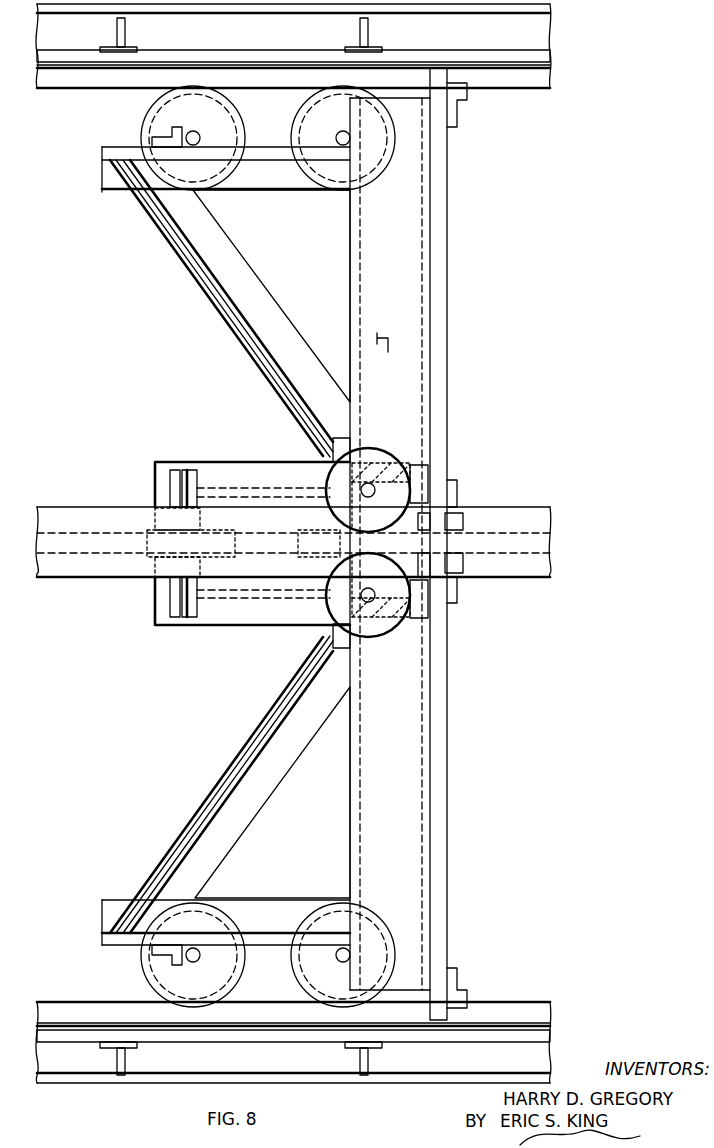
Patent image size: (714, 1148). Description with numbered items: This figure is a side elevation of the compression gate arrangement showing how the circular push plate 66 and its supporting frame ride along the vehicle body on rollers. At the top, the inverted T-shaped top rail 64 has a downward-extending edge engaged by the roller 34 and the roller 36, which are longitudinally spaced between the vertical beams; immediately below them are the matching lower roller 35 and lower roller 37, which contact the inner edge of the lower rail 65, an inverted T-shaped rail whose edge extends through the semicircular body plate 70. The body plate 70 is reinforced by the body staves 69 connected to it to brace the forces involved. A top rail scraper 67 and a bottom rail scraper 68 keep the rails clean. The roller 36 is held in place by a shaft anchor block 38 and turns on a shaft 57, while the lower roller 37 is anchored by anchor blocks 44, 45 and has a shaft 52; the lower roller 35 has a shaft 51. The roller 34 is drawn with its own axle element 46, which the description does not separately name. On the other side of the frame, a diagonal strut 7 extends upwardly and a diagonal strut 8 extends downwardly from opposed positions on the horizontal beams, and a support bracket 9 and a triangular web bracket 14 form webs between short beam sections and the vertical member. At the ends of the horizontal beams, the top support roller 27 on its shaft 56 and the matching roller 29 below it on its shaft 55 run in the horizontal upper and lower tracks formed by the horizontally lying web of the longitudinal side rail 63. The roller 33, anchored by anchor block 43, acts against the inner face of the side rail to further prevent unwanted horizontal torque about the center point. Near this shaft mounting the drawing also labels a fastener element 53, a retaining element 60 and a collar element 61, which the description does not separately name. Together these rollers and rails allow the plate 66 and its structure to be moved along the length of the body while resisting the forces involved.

The strut 7 is at (245, 723).
The strut 8 is at (245, 368).
The support bracket 9 is at (313, 262).
The bracket 14 is at (310, 828).
The top support roller 27 is at (368, 455).
The roller 29 is at (385, 585).
The roller 33 is at (160, 545).
The roller 34 is at (294, 118).
The lower roller 35 is at (283, 975).
The roller 36 is at (142, 120).
The lower roller 37 is at (246, 968).
The shaft anchor block 38 is at (170, 133).
The anchor block 43 is at (172, 958).
The anchor block 44 is at (168, 608).
The anchor block 45 is at (163, 480).
The upper wheel axle 46 is at (350, 139).
The shaft 51 is at (350, 955).
The shaft 52 is at (200, 955).
The housing bolt 53 is at (182, 460).
The shaft 55 is at (385, 600).
The shaft 56 is at (425, 490).
The shaft 57 is at (200, 138).
The retaining nut 60 is at (463, 563).
The collar 61 is at (455, 500).
The side rail 63 is at (555, 527).
The top rail 64 is at (537, 36).
The lower rail 65 is at (535, 1015).
The plate 66 is at (447, 352).
The top rail scraper 67 is at (462, 105).
The bottom rail scraper 68 is at (460, 983).
The body stave 69 is at (360, 43).
The body plate 70 is at (540, 58).